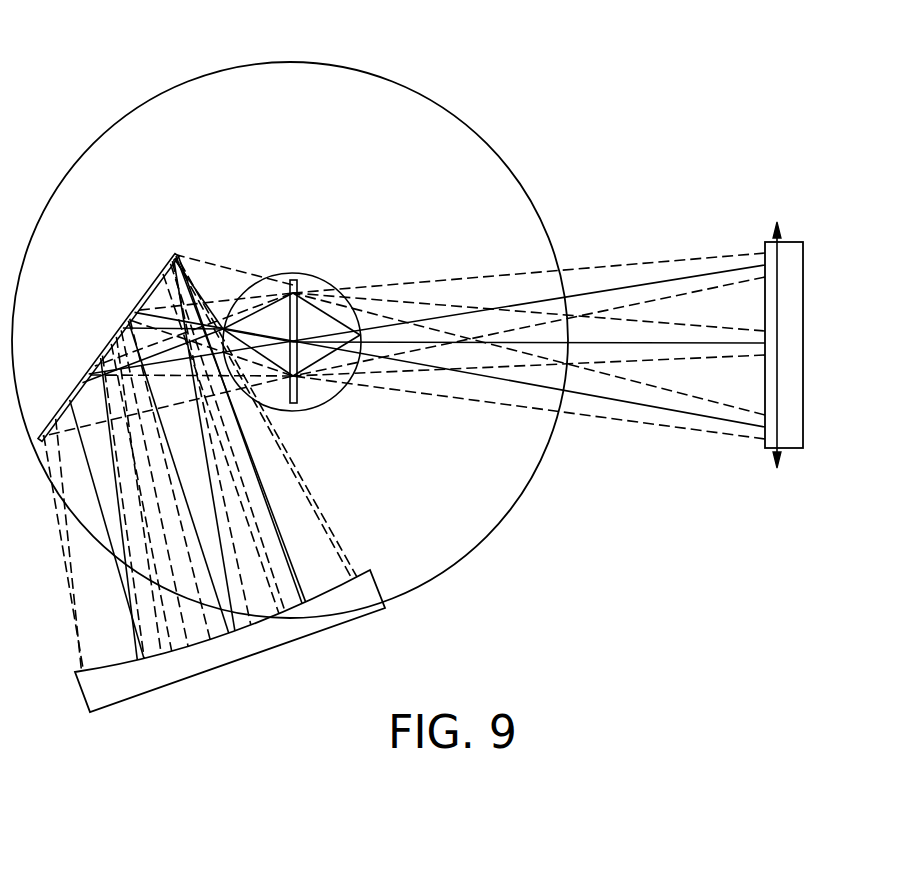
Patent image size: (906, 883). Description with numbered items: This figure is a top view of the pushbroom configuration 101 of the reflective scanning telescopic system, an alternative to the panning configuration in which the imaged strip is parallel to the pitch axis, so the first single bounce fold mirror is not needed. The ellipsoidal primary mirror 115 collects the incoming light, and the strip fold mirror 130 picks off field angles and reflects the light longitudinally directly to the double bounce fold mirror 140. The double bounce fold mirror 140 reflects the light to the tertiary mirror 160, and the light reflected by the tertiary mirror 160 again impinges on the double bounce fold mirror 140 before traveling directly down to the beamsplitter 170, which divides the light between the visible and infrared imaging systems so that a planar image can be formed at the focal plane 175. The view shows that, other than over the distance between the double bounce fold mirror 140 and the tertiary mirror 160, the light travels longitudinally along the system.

The pushbroom configuration 101 is at (112, 99).
The ellipsoidal primary mirror 115 is at (437, 100).
The strip fold mirror 130 is at (308, 272).
The double bounce fold mirror 140 is at (176, 252).
The tertiary mirror 160 is at (385, 608).
The beamsplitter 170 is at (803, 335).
The focal plane 175 is at (775, 328).